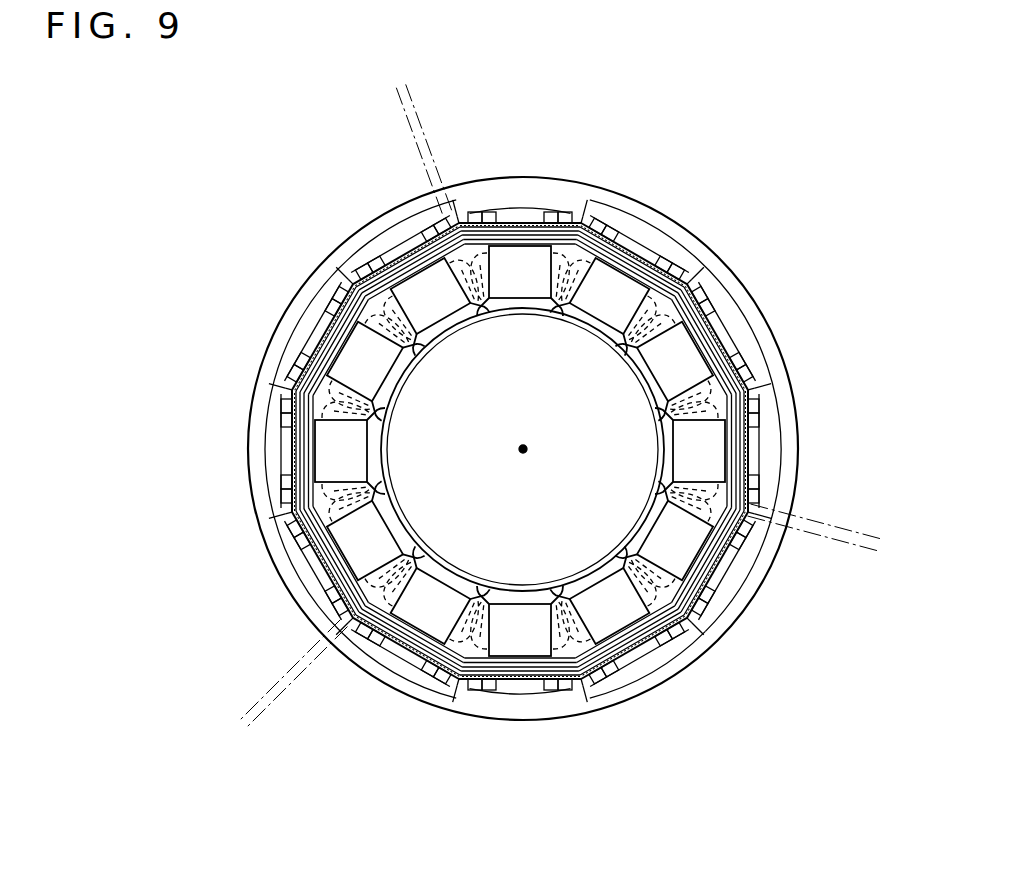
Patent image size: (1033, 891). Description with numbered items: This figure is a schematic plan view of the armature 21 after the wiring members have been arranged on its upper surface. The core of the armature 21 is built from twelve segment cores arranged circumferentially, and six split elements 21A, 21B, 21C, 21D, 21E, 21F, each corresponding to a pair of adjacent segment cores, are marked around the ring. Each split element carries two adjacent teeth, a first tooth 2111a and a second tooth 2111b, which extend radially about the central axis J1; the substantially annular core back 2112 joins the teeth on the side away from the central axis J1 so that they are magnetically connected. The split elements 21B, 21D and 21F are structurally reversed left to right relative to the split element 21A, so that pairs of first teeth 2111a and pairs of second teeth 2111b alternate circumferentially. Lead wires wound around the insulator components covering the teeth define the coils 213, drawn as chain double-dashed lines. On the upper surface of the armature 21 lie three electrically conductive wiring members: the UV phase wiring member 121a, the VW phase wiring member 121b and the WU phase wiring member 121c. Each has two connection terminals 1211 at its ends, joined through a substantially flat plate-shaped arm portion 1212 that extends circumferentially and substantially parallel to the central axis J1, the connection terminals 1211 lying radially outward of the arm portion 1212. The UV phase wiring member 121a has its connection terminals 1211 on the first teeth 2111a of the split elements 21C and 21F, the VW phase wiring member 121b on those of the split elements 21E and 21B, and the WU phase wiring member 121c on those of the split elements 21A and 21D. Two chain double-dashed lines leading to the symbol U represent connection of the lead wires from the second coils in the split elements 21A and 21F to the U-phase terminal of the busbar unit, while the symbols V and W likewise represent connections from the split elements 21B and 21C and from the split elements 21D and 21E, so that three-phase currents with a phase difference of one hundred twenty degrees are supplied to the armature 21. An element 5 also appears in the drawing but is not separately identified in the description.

The bus bar unit 5 is at (385, 247).
The armature 21 is at (256, 66).
The split element 21A is at (684, 138).
The split element 21B is at (833, 376).
The split element 21C is at (808, 666).
The split element 21D is at (412, 798).
The split element 21E is at (233, 526).
The split element 21F is at (236, 220).
The UV phase wiring member 121a is at (777, 232).
The VW phase wiring member 121b is at (664, 808).
The WU phase wiring member 121c is at (197, 356).
The connection terminals 1211 is at (600, 222).
The arm portion 1212 is at (688, 268).
The first tooth 2111a is at (642, 240).
The second tooth 2111b is at (532, 258).
The core back 2112 is at (479, 212).
The coils 213 is at (390, 245).
The central axis J1 is at (520, 447).
The U-phase connection symbol U is at (423, 136).
The V-phase connection symbol V is at (815, 527).
The W-phase connection symbol W is at (288, 681).